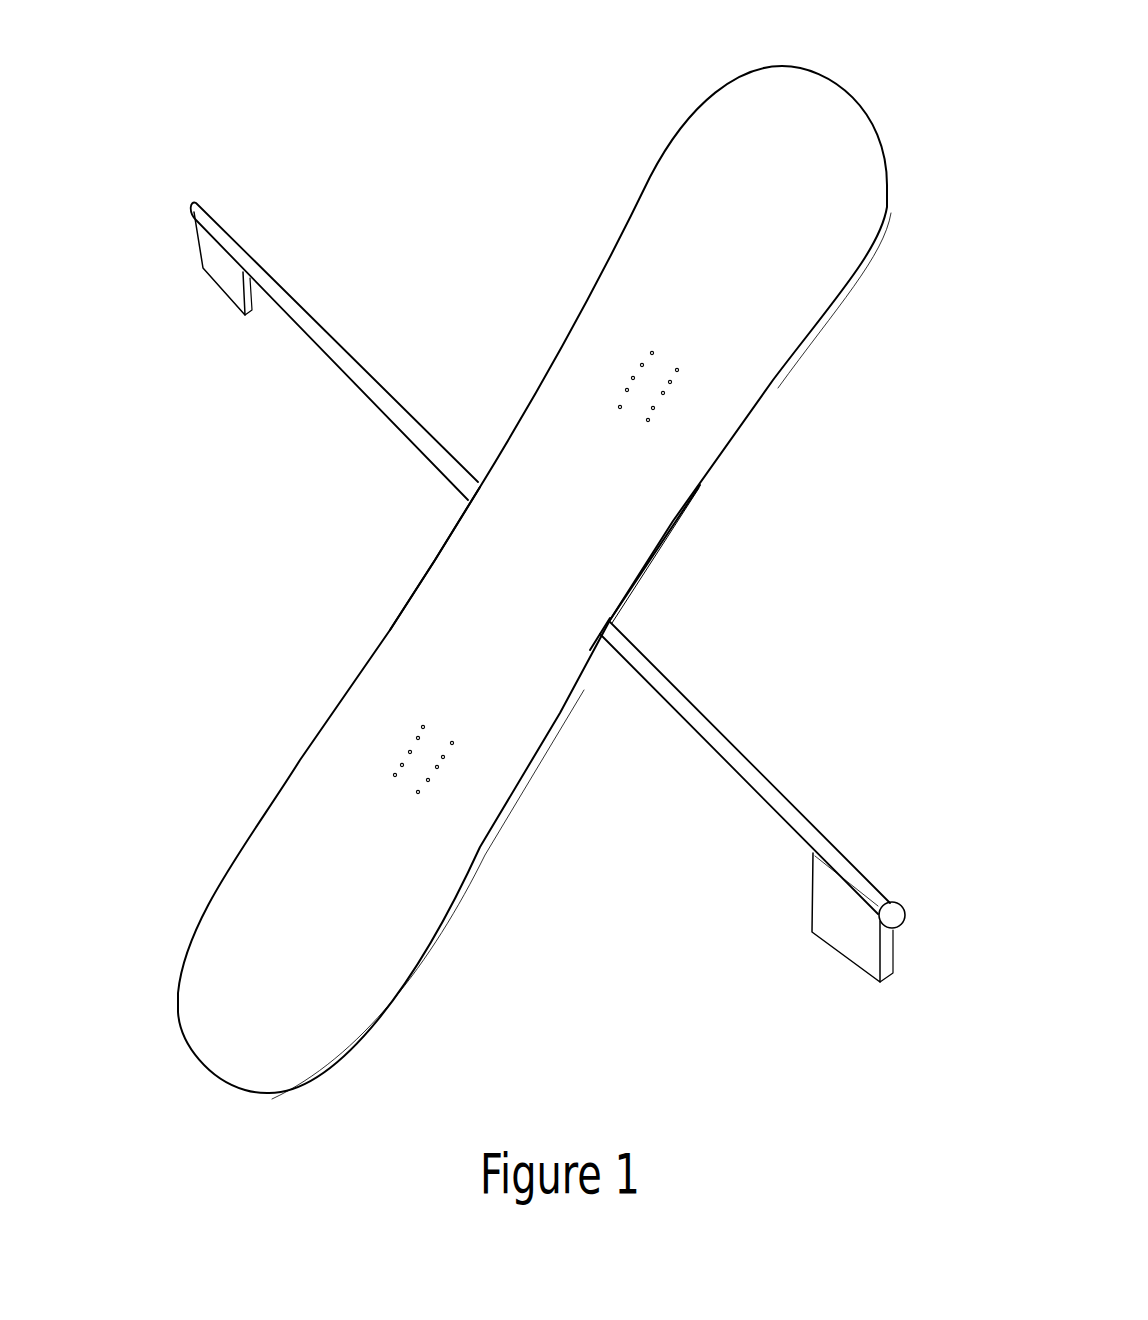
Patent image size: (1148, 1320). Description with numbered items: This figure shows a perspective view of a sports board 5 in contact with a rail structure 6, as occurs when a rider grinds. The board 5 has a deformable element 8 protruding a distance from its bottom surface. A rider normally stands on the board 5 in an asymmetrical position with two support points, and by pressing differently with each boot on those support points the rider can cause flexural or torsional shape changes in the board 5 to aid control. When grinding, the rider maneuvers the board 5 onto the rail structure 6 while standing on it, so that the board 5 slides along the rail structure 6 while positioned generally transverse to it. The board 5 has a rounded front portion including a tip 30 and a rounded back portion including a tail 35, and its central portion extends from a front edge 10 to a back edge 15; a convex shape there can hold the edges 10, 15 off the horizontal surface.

The board 5 is at (558, 158).
The rail structure 6 is at (238, 240).
The deformable element 8 is at (673, 522).
The front edge 10 is at (593, 665).
The back edge 15 is at (432, 558).
The tip 30 is at (218, 1032).
The tail 35 is at (823, 107).